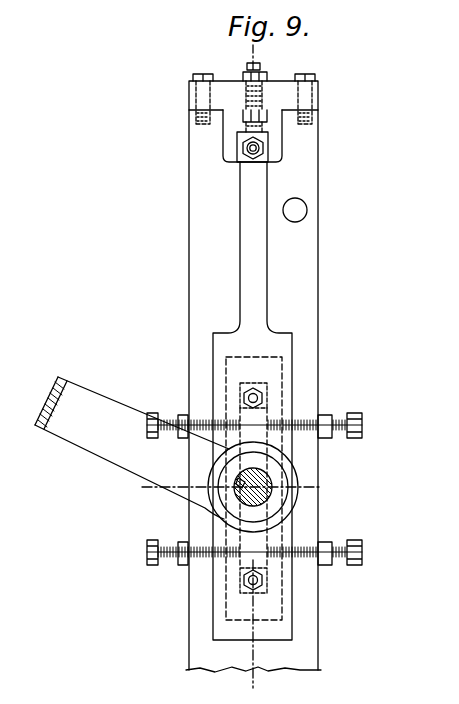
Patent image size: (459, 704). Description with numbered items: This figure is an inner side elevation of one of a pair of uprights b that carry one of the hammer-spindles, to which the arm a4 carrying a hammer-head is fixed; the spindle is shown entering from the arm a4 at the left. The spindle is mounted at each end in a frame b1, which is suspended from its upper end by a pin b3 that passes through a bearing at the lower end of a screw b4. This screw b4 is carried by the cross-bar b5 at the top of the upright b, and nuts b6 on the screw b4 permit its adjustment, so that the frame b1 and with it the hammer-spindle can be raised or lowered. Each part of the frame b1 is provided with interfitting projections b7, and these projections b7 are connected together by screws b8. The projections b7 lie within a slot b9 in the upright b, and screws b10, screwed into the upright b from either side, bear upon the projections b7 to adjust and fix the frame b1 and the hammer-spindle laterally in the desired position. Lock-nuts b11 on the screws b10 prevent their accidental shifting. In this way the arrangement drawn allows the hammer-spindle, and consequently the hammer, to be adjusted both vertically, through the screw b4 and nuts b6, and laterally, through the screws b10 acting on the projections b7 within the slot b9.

The upright b is at (232, 366).
The frame b1 is at (252, 401).
The pin b3 is at (268, 148).
The screw b4 is at (259, 67).
The cross-bar b5 is at (318, 100).
The nuts b6 is at (245, 113).
The interfitting projections b7 is at (240, 588).
The screws b8 is at (294, 584).
The slot b9 is at (267, 606).
The screws b10 is at (366, 532).
The lock-nuts b11 is at (325, 541).
The arm a4 is at (169, 448).